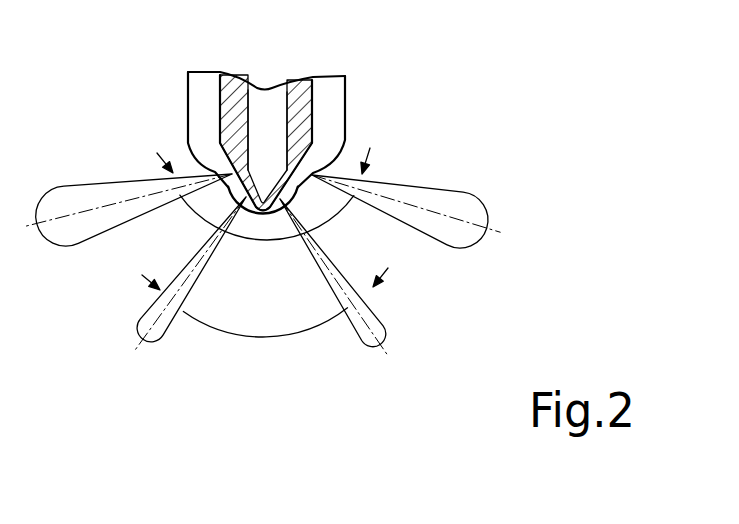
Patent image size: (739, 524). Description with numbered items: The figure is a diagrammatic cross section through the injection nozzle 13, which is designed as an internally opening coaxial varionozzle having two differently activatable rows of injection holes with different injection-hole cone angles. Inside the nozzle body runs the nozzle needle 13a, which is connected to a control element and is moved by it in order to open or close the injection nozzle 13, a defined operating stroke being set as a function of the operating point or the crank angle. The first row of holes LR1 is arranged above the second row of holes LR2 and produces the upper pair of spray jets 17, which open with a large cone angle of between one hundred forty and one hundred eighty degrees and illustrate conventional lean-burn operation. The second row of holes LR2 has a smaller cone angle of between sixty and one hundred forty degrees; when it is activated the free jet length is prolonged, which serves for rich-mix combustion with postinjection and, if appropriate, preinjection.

The injection nozzle 13 is at (347, 97).
The nozzle needle 13a is at (262, 88).
The upper spray jet lobes 17 is at (473, 248).
The first row of holes LR1 is at (438, 195).
The second row of holes LR2 is at (385, 352).